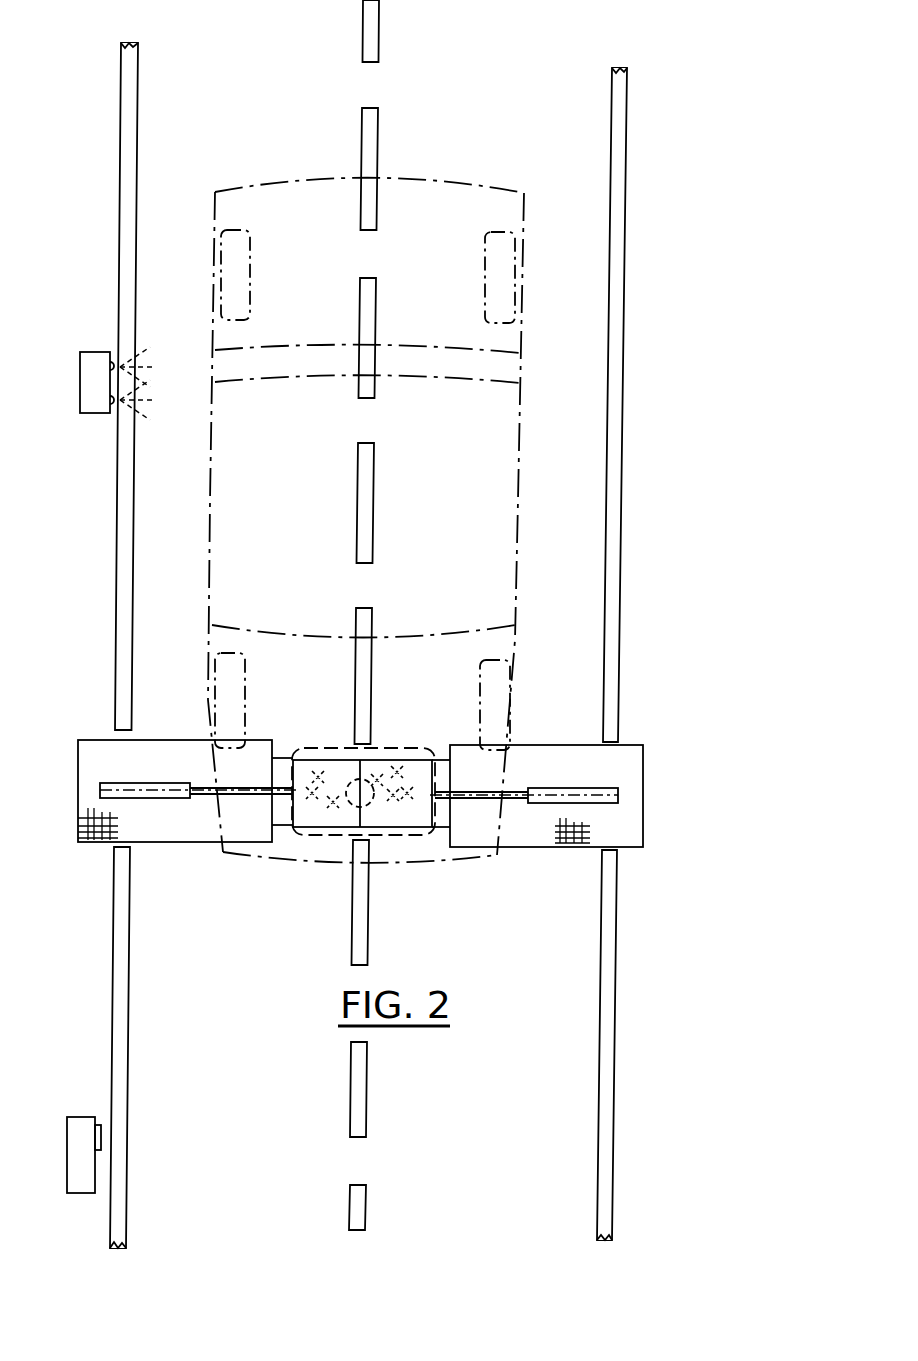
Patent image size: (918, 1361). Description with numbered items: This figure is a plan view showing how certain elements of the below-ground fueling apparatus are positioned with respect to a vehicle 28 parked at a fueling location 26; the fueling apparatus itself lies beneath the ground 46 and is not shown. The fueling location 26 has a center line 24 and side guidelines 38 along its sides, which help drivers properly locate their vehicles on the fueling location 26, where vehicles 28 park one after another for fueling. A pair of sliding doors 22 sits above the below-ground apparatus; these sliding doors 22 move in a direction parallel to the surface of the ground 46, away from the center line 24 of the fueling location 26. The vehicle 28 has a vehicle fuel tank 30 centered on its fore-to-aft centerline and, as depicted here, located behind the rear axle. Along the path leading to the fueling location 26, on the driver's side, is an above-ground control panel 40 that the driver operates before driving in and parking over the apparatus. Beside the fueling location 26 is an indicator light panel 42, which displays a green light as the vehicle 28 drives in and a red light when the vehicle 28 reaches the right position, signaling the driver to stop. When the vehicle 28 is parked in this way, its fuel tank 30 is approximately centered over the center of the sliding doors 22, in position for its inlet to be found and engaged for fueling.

The sliding doors 22 is at (333, 804).
The center line 24 is at (371, 125).
The fueling location 26 is at (535, 425).
The vehicle 28 is at (525, 252).
The vehicle fuel tank 30 is at (400, 750).
The side guidelines 38 is at (131, 107).
The above-ground control panel 40 is at (84, 1135).
The indicator light panel 42 is at (97, 365).
The ground 46 is at (520, 892).